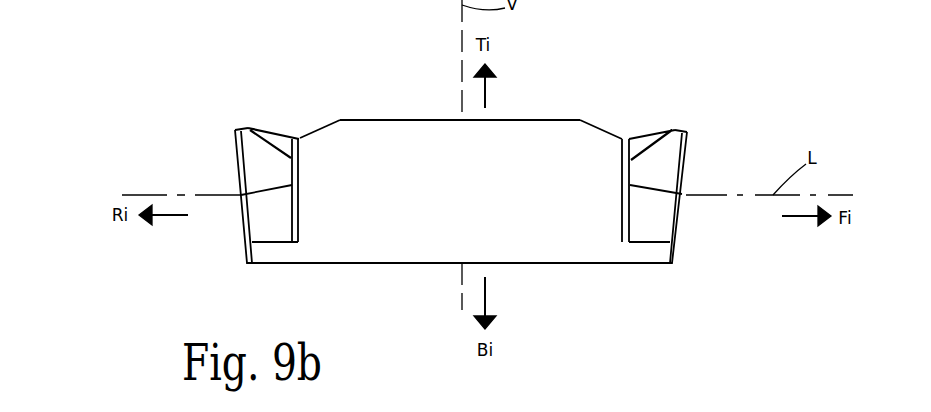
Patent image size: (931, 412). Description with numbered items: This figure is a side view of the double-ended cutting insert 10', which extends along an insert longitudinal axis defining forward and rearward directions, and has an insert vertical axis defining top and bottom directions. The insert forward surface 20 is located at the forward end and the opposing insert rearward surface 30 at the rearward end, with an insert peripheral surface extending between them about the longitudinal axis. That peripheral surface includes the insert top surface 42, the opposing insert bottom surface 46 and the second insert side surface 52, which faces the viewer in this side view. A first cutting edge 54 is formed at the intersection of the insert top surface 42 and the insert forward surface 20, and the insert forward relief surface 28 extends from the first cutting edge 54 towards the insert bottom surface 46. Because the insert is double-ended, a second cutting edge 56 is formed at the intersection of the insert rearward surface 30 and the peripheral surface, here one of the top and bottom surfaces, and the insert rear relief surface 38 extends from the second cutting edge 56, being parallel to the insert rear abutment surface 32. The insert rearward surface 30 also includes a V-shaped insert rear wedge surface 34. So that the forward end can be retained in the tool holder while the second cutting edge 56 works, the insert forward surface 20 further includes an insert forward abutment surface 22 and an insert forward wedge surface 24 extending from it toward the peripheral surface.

The cutting insert 10' is at (473, 81).
The insert forward surface 20 is at (744, 150).
The insert forward abutment surface 22 is at (684, 175).
The insert forward wedge surface 24 is at (715, 218).
The insert forward relief surface 28 is at (688, 150).
The insert rearward surface 30 is at (106, 127).
The insert rear abutment surface 32 is at (238, 175).
The insert rear wedge surface 34 is at (218, 228).
The insert rear relief surface 38 is at (238, 153).
The insert top surface 42 is at (377, 81).
The insert bottom surface 46 is at (355, 272).
The second insert side surface 52 is at (418, 240).
The first cutting edge 54 is at (688, 137).
The second cutting edge 56 is at (237, 130).